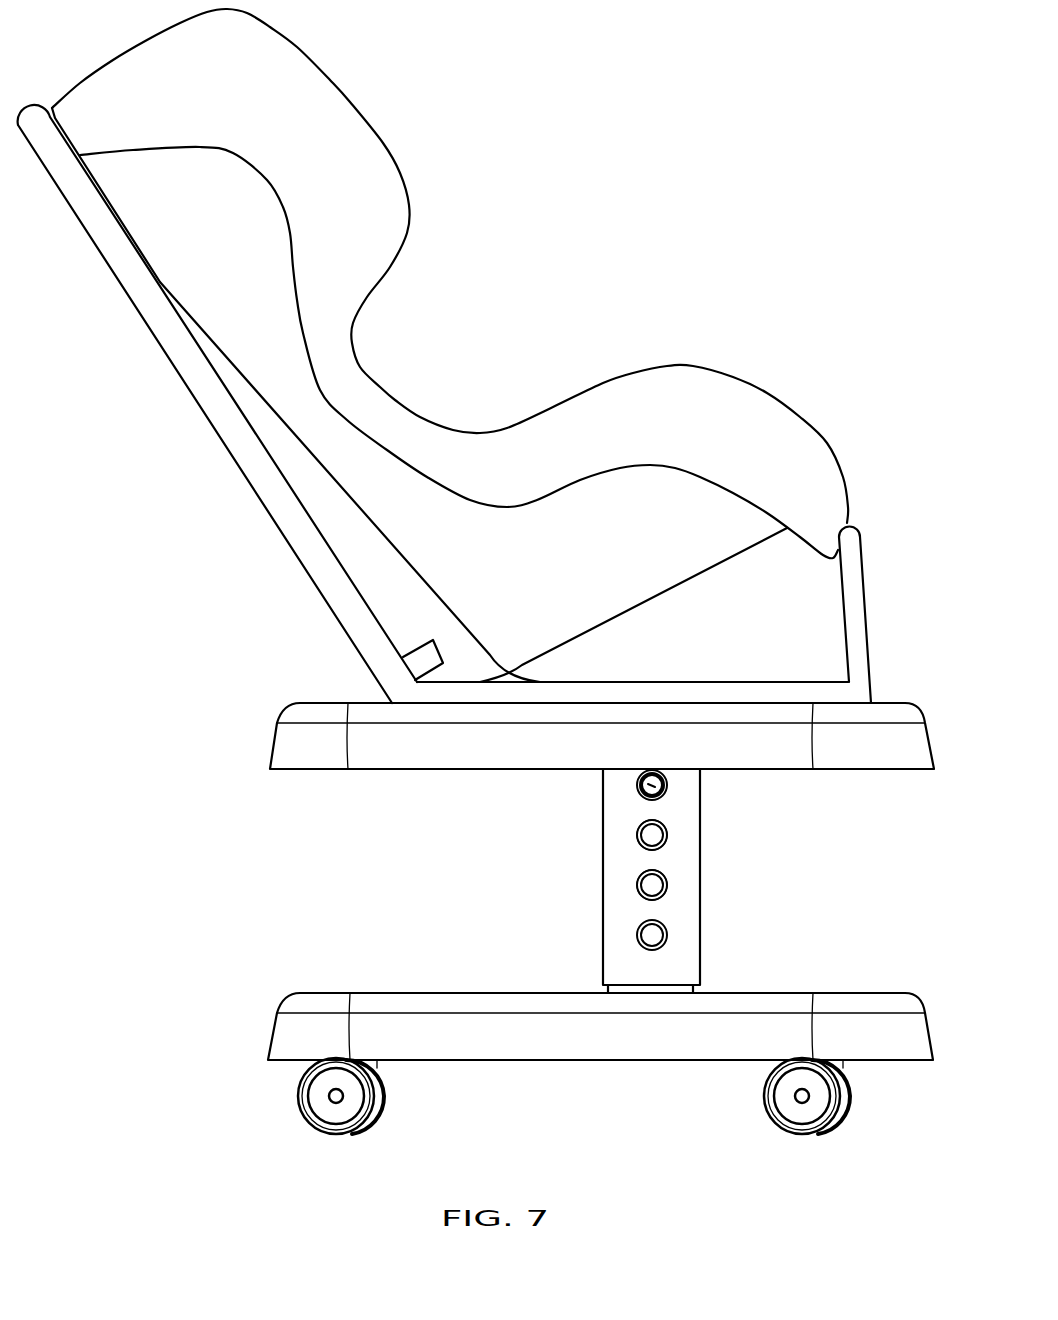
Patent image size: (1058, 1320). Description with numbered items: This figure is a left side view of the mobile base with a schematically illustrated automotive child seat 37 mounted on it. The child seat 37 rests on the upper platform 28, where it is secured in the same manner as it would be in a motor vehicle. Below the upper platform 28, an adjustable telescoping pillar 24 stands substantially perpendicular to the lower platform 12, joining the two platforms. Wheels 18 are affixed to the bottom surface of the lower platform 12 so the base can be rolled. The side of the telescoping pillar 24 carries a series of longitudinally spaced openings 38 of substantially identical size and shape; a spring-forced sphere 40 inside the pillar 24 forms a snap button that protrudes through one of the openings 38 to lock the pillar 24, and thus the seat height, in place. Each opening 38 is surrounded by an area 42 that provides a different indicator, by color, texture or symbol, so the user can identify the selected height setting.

The automotive child seat 37 is at (350, 102).
The upper platform 28 is at (273, 739).
The telescoping pillar 24 is at (700, 878).
The openings 38 is at (642, 799).
The sphere 40 is at (637, 785).
The area 42 is at (662, 823).
The lower platform 12 is at (283, 996).
The wheels 18 is at (383, 1113).